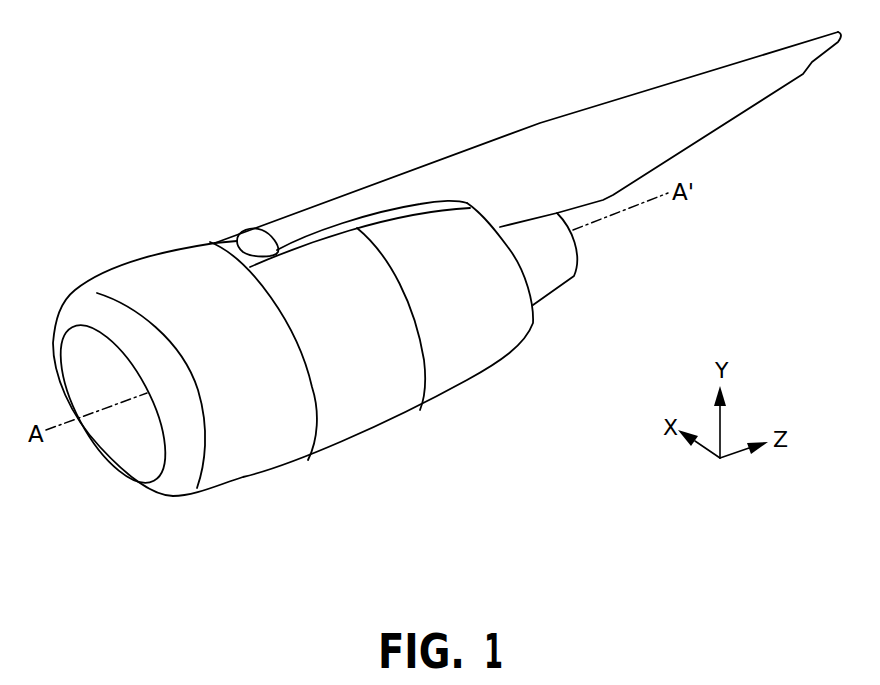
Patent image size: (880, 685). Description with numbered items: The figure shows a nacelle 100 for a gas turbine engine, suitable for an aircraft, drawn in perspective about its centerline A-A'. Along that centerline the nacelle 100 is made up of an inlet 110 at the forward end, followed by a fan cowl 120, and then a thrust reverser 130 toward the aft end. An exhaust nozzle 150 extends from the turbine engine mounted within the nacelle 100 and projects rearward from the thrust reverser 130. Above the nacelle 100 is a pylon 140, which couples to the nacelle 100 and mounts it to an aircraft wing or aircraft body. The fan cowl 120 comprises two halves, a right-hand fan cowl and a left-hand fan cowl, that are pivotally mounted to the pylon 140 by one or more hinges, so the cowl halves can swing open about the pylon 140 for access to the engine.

The nacelle 100 is at (155, 92).
The inlet 110 is at (131, 295).
The fan cowl 120 is at (400, 405).
The thrust reverser 130 is at (478, 353).
The pylon 140 is at (478, 158).
The exhaust nozzle 150 is at (558, 263).